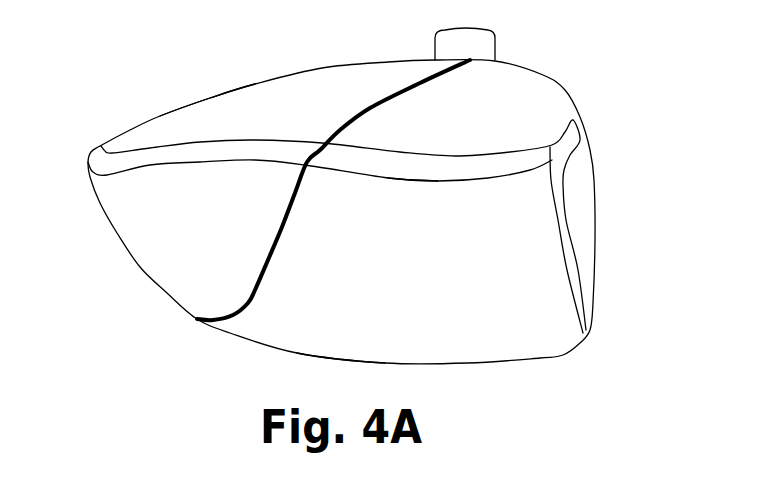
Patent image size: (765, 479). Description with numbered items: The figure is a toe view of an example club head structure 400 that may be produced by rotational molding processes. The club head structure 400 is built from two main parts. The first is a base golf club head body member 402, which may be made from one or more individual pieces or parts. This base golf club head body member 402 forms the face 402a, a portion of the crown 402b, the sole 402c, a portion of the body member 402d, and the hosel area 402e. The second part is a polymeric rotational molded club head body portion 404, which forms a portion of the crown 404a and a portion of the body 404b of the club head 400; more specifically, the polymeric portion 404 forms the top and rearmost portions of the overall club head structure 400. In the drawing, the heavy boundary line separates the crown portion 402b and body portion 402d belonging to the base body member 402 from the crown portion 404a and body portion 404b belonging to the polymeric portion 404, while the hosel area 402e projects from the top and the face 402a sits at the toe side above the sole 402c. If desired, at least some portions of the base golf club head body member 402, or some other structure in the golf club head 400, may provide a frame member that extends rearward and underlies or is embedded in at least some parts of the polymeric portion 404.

The club head structure 400 is at (225, 56).
The base golf club head body member 402 is at (572, 62).
The face 402a is at (583, 208).
The portion of the crown 402b is at (498, 113).
The sole 402c is at (470, 364).
The portion of the body member 402d is at (413, 215).
The hosel area 402e is at (435, 48).
The polymeric rotational molded club head body portion 404 is at (151, 109).
The portion of the crown 404a is at (245, 107).
The portion of the body 404b is at (155, 243).